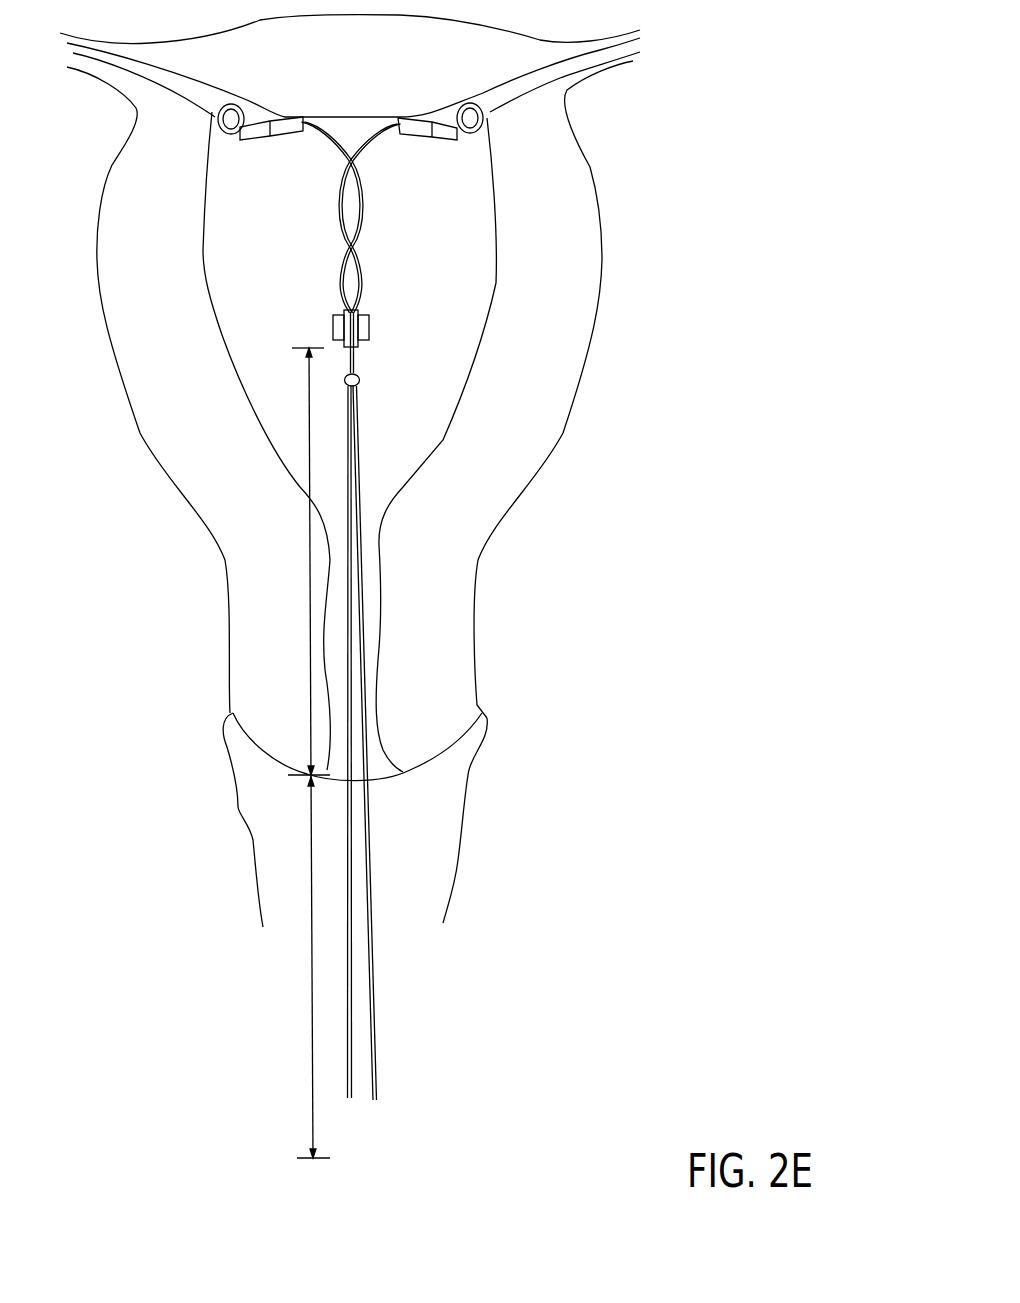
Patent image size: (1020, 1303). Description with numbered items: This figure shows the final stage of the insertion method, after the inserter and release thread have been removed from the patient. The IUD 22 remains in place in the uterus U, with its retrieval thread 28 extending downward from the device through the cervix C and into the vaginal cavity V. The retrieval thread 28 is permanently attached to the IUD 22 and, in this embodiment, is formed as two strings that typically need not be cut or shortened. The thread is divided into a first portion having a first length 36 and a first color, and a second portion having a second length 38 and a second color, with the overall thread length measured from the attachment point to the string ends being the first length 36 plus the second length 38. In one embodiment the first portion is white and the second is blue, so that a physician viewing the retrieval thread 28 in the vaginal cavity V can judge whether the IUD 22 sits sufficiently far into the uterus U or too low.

The IUD 22 is at (314, 142).
The retrieval thread 28 is at (355, 420).
The first length 36 is at (310, 613).
The second length 38 is at (312, 960).
The uterus U is at (487, 297).
The cervix C is at (382, 625).
The vaginal cavity V is at (250, 815).